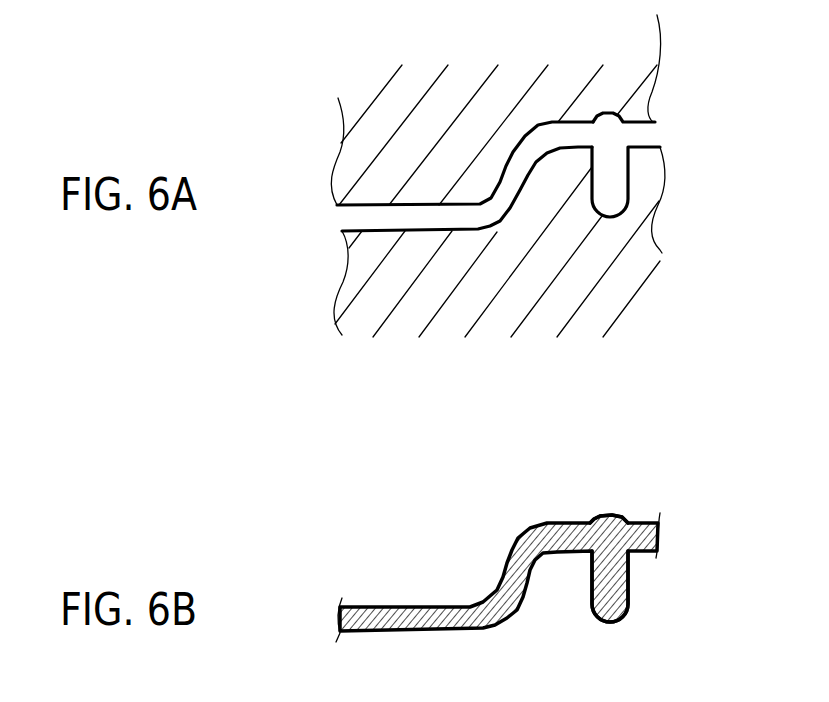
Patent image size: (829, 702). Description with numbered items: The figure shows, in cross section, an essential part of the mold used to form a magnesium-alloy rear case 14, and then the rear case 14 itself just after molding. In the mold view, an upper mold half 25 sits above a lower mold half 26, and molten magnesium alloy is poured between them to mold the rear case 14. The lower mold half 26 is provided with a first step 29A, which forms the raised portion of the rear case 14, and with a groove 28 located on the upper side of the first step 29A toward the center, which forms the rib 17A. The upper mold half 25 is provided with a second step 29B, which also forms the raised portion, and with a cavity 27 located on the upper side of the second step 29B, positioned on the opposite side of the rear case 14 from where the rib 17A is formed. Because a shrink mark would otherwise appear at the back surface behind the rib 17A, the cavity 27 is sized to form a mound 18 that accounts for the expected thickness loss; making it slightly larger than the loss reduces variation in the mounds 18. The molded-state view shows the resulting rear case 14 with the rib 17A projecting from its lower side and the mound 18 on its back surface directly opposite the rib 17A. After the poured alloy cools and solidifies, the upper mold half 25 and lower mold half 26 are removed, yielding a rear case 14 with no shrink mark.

In FIG. 6A, the upper mold half 25 is at (347, 165).
In FIG. 6A, the lower mold half 26 is at (360, 265).
In FIG. 6A, the cavity 27 is at (614, 114).
In FIG. 6A, the groove 28 is at (619, 175).
In FIG. 6A, the first step 29A is at (528, 180).
In FIG. 6A, the second step 29B is at (500, 178).
In FIG. 6B, the rear case 14 is at (410, 618).
In FIG. 6B, the mound 18 is at (610, 522).
In FIG. 6B, the rib 17A is at (615, 612).